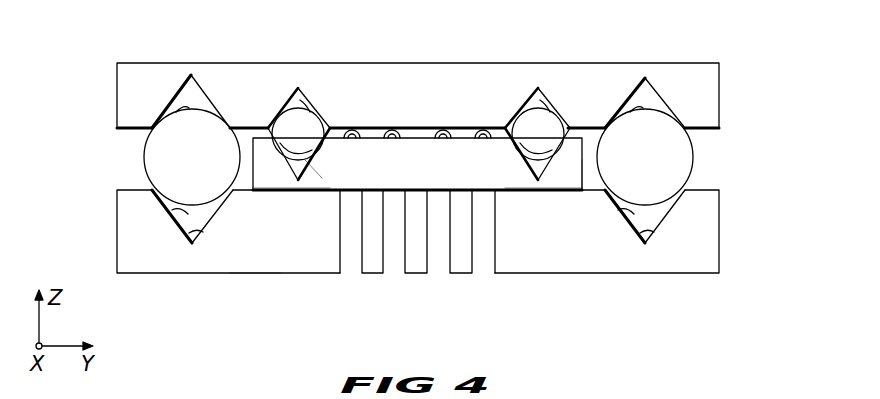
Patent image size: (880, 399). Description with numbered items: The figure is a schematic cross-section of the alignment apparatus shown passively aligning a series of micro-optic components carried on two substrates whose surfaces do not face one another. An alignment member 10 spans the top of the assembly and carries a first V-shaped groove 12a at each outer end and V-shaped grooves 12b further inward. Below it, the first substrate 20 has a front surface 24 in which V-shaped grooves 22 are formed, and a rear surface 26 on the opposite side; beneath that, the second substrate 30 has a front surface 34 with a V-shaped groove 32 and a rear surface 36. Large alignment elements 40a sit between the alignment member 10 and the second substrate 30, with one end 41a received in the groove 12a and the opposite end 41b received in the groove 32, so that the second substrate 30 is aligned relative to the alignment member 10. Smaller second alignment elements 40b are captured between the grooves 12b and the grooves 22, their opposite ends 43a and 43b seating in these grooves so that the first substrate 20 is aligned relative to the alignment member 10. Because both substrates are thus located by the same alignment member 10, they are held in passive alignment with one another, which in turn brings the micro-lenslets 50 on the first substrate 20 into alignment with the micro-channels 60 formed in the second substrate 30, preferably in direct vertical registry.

The alignment member 10 is at (406, 106).
The first V-shaped groove 12a is at (202, 98).
The V-shaped grooves 12b is at (303, 107).
The first substrate 20 is at (425, 175).
The V-shaped grooves 22 is at (303, 192).
The front surface 24 is at (507, 127).
The rear surface 26 is at (326, 172).
The second substrate 30 is at (278, 256).
The V-shaped groove 32 is at (194, 246).
The front surface 34 is at (591, 190).
The rear surface 36 is at (257, 274).
The alignment elements 40a is at (200, 170).
The second alignment elements 40b is at (304, 146).
The end of alignment element 41a is at (185, 110).
The end of alignment element 41b is at (172, 216).
The end of alignment element 43a is at (308, 110).
The end of alignment element 43b is at (272, 142).
The micro-lenslets 50 is at (360, 130).
The micro-channels 60 is at (353, 254).